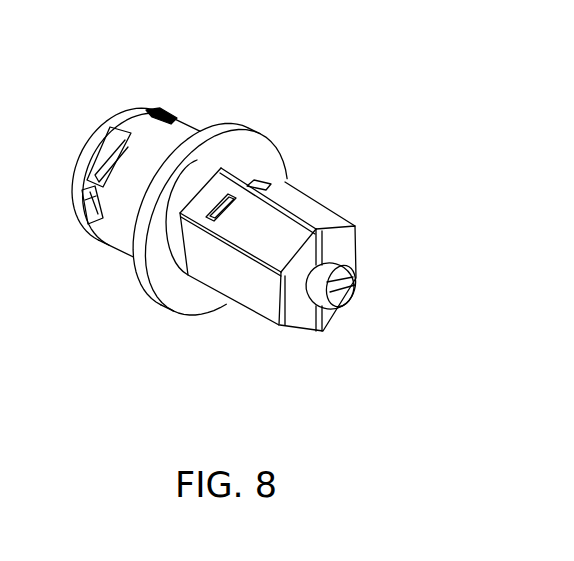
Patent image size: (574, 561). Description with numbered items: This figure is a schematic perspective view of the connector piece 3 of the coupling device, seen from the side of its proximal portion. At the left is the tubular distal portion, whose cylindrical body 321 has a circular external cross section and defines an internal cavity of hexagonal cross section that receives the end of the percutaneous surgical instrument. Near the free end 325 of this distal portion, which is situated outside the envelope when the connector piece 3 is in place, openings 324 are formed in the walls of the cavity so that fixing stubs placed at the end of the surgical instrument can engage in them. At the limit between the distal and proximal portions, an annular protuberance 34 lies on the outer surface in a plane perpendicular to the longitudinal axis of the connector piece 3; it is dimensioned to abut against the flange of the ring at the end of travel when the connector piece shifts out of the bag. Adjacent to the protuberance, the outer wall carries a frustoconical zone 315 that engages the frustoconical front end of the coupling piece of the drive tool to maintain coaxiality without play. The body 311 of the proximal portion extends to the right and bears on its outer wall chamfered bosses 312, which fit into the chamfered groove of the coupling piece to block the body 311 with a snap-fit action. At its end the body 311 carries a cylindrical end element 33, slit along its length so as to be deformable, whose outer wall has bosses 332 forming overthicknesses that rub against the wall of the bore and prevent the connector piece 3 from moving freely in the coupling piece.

The connector piece 3 is at (243, 63).
The annular protuberance 34 is at (262, 145).
The body of the proximal portion 311 is at (240, 293).
The chamfered bosses 312 is at (272, 183).
The frustoconical zone 315 is at (173, 280).
The cylindrical body 321 is at (125, 245).
The openings 324 is at (107, 150).
The free end 325 is at (135, 113).
The cylindrical end element 33 is at (340, 305).
The bosses 332 is at (343, 260).